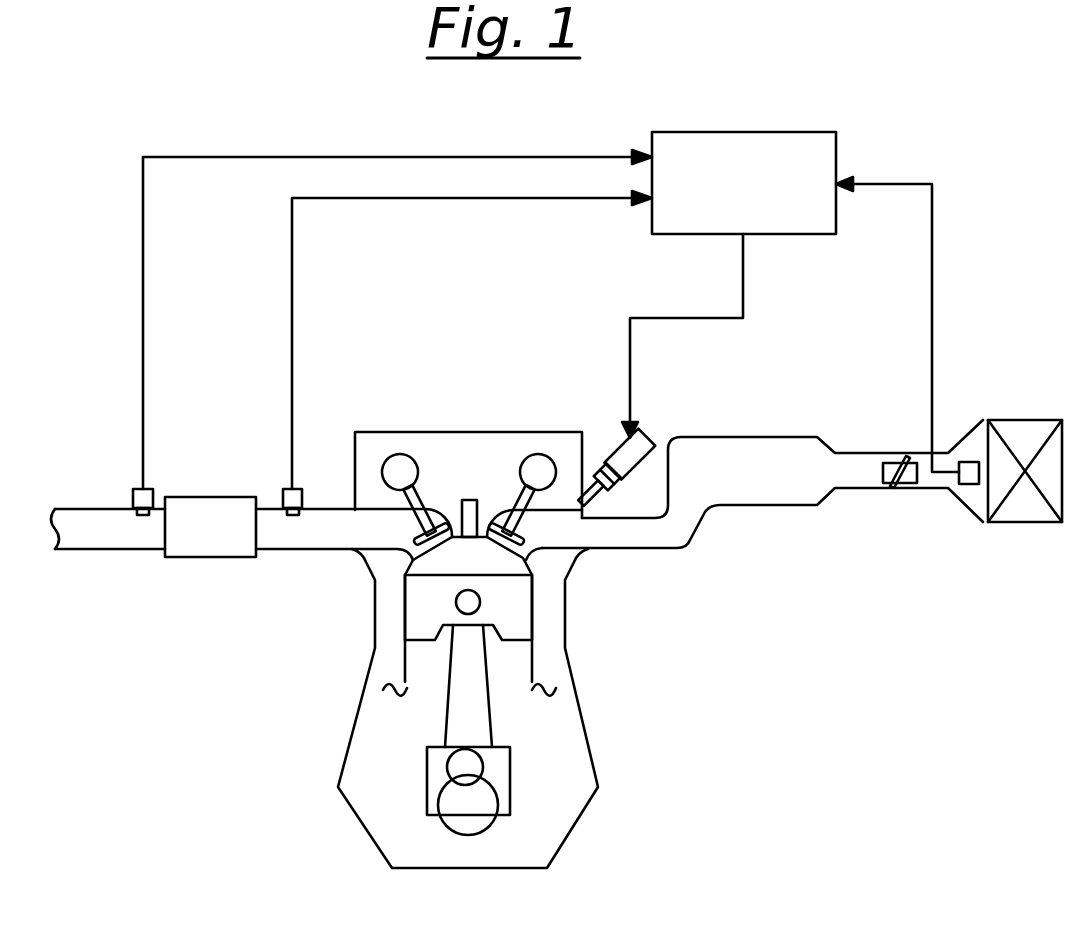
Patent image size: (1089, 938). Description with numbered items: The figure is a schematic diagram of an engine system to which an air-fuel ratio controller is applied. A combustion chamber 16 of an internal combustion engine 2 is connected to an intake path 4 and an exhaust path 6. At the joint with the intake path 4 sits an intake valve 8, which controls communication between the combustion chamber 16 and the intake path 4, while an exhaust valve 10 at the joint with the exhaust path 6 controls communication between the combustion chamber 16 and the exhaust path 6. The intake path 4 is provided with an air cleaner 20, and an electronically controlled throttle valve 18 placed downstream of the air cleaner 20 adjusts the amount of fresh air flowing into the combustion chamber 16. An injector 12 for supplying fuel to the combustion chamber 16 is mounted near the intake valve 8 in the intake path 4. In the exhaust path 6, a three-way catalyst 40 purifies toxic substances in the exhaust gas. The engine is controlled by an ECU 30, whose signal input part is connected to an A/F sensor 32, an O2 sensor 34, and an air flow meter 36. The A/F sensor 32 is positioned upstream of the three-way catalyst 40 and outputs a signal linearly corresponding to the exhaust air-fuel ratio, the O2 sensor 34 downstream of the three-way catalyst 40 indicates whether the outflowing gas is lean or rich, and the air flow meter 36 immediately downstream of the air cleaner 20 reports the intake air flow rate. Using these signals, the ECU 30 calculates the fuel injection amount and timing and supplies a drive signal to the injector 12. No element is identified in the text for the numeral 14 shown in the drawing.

The internal combustion engine 2 is at (435, 432).
The intake path 4 is at (760, 435).
The exhaust path 6 is at (272, 550).
The intake valve 8 is at (542, 548).
The exhaust valve 10 is at (403, 492).
The injector 12 is at (620, 448).
The spark plug 14 is at (470, 500).
The combustion chamber 16 is at (418, 567).
The electronically controlled throttle valve 18 is at (888, 463).
The air cleaner 20 is at (1023, 418).
The ECU (Electronic Control Unit) 30 is at (785, 130).
The A/F sensor 32 is at (295, 488).
The O2 sensor 34 is at (145, 488).
The air flow meter 36 is at (972, 460).
The three-way catalyst 40 is at (228, 497).